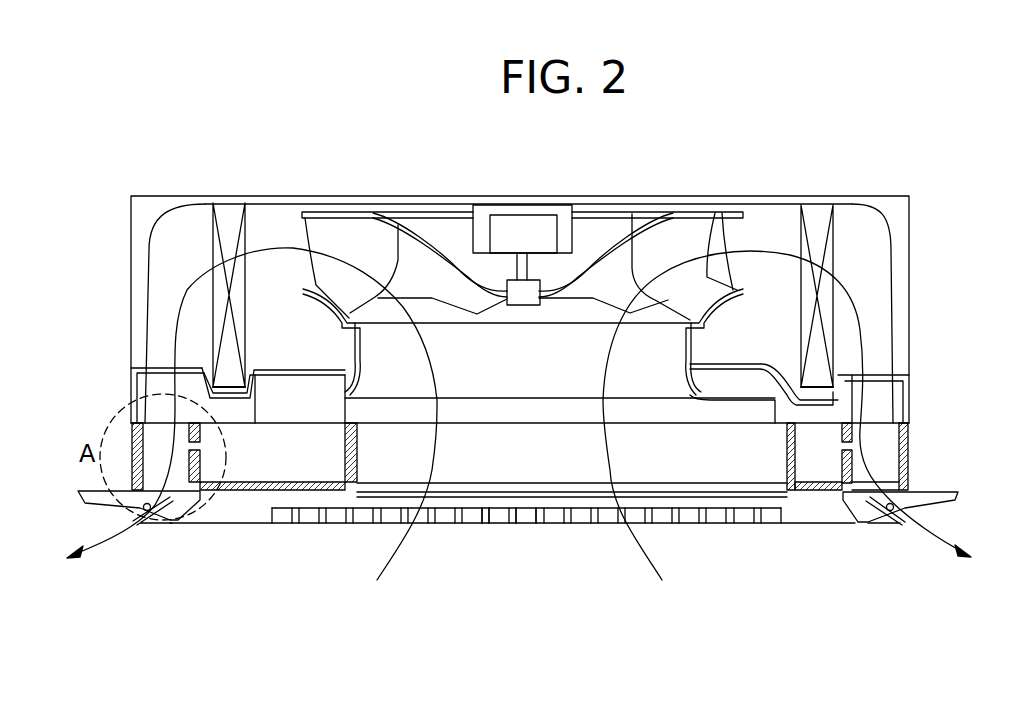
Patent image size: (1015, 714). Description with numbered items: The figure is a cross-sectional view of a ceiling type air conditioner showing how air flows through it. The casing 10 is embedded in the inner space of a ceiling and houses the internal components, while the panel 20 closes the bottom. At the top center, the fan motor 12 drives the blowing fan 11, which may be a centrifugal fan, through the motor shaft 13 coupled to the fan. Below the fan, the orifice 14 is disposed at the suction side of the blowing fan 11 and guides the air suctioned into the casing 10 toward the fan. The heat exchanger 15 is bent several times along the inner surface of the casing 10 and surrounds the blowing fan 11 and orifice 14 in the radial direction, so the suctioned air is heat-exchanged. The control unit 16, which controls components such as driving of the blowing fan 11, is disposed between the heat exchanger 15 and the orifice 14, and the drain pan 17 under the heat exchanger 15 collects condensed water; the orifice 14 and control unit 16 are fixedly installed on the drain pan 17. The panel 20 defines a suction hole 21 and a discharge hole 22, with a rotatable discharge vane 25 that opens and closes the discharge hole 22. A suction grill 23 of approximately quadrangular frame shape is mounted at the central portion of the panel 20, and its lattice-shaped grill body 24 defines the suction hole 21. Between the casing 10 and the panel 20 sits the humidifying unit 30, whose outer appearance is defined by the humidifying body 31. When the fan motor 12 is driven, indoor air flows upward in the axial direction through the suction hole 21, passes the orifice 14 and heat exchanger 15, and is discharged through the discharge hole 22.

The casing 10 is at (910, 212).
The blowing fan 11 is at (664, 212).
The fan motor 12 is at (552, 212).
The motor shaft 13 is at (509, 253).
The orifice 14 is at (724, 212).
The heat exchanger 15 is at (816, 210).
The control unit 16 is at (268, 390).
The drain pan 17 is at (763, 364).
The panel 20 is at (845, 524).
The suction hole 21 is at (536, 514).
The discharge hole 22 is at (178, 506).
The suction grill 23 is at (269, 525).
The grill body 24 is at (486, 523).
The discharge vane 25 is at (135, 522).
The humidifying unit 30 is at (917, 464).
The humidifying body 31 is at (908, 433).